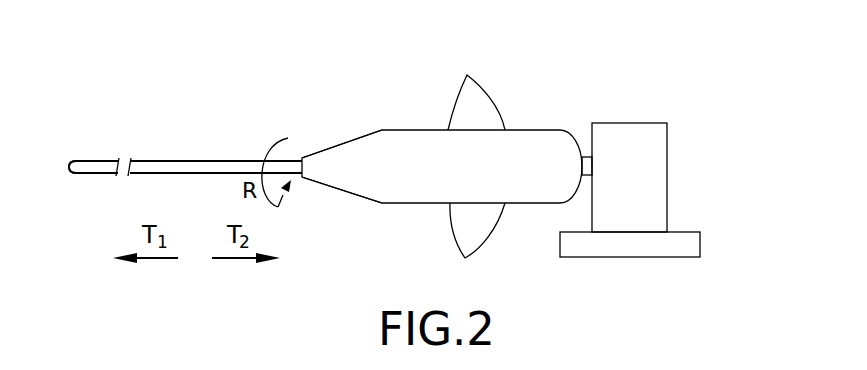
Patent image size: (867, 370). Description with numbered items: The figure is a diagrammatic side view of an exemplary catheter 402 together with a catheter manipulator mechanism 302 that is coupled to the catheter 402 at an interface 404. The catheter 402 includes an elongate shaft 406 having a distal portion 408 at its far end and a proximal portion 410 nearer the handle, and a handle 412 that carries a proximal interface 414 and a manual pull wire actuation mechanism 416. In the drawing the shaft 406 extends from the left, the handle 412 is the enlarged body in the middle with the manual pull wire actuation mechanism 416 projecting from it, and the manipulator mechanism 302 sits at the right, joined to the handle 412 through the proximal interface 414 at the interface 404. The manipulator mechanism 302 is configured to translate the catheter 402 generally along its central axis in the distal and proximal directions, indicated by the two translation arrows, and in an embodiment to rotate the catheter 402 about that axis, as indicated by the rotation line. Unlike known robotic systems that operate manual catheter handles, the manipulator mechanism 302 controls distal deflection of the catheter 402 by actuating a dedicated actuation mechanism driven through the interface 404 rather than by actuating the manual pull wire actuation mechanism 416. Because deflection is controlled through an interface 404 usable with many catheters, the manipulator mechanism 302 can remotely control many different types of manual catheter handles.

The catheter manipulator mechanism 302 is at (630, 128).
The catheter 402 is at (400, 56).
The interface 404 is at (585, 82).
The shaft 406 is at (175, 162).
The distal portion 408 is at (93, 162).
The proximal portion 410 is at (233, 160).
The handle 412 is at (373, 130).
The proximal interface 414 is at (572, 112).
The manual pull wire actuation mechanism 416 is at (467, 75).